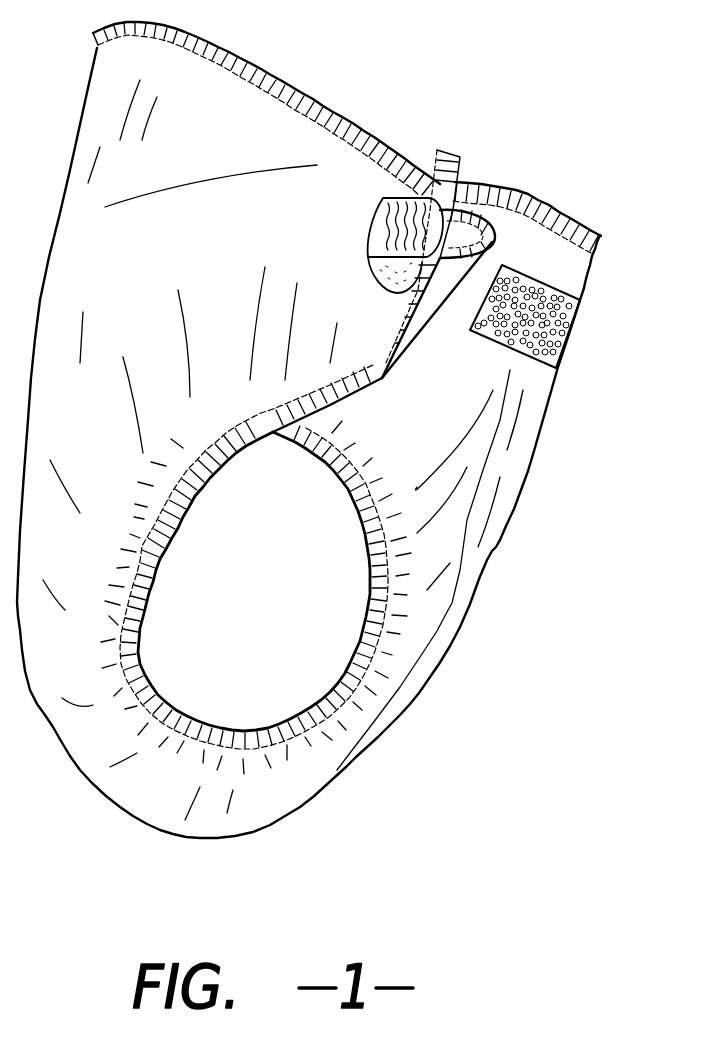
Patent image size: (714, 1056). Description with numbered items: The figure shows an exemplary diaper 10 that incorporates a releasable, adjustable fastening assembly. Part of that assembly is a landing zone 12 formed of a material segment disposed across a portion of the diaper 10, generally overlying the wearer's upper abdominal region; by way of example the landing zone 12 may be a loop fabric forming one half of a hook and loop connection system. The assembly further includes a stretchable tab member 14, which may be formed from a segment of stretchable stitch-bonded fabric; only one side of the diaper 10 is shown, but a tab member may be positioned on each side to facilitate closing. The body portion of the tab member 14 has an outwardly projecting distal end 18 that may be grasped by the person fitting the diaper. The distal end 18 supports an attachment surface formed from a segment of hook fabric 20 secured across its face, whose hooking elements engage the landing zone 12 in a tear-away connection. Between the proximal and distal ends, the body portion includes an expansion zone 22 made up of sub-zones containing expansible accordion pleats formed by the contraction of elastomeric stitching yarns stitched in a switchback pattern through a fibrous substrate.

The diaper 10 is at (597, 127).
The landing zone 12 is at (563, 327).
The stretchable tab member 14 is at (361, 214).
The distal end 18 is at (411, 215).
The hook fabric 20 is at (455, 165).
The expansion zone 22 is at (391, 210).